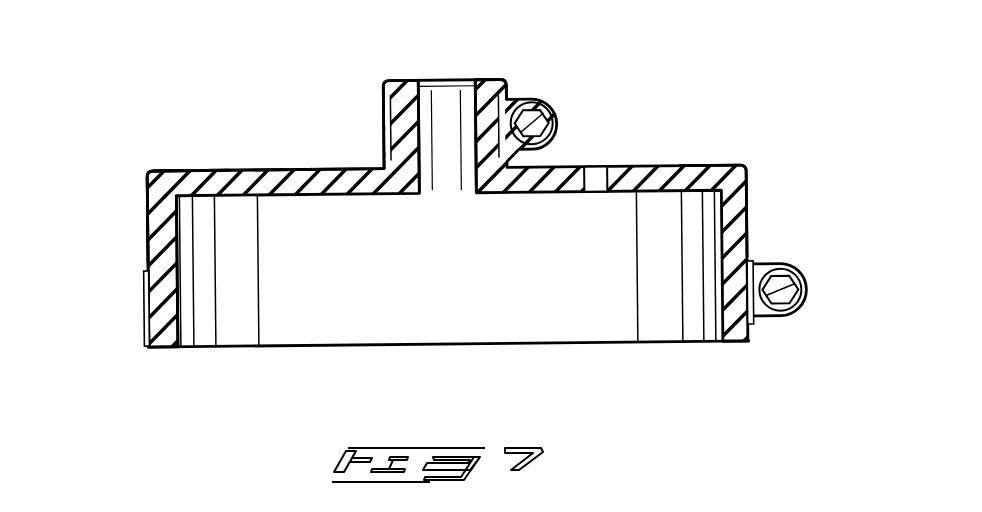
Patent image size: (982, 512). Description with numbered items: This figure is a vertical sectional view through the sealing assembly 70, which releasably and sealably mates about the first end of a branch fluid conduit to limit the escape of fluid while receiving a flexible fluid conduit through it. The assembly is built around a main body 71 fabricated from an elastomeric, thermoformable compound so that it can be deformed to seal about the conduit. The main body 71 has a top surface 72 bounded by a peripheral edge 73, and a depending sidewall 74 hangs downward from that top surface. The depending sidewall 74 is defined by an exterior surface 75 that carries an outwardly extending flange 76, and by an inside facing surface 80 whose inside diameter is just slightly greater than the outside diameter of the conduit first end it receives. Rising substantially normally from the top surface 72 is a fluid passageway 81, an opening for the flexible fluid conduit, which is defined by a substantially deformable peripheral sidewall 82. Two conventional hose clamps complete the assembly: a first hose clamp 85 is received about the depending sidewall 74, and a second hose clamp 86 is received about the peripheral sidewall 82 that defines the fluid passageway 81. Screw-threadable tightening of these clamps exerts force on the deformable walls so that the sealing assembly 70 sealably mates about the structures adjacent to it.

The sealing assembly 70 is at (645, 101).
The main body 71 is at (326, 173).
The top surface 72 is at (218, 171).
The peripheral edge 73 is at (749, 166).
The depending sidewall 74 is at (160, 228).
The exterior surface 75 is at (150, 242).
The outwardly extending flange 76 is at (146, 343).
The inside facing surface 80 is at (178, 273).
The fluid passageway 81 is at (467, 83).
The peripheral sidewall 82 is at (486, 86).
The first hose clamp 85 is at (796, 273).
The second hose clamp 86 is at (556, 131).